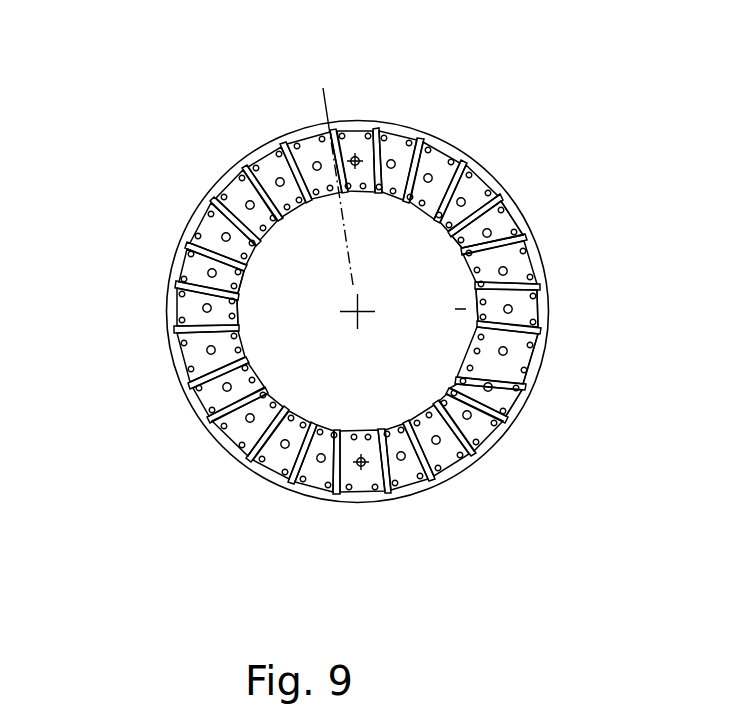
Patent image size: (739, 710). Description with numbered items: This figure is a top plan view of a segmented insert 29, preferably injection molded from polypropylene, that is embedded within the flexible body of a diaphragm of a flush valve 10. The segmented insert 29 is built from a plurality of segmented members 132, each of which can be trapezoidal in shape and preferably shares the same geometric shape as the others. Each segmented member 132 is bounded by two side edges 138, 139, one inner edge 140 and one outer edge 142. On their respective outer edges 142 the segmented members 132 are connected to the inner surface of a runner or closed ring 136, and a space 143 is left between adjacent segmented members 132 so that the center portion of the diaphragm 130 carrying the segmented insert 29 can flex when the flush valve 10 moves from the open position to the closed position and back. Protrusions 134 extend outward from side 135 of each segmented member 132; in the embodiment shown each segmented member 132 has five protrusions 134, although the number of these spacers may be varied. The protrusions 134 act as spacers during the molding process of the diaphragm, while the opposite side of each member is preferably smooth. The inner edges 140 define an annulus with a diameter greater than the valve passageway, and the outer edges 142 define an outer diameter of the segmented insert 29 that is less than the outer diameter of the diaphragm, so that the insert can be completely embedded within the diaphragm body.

The center portion of the diaphragm 130 is at (365, 110).
The segmented member 132 is at (264, 161).
The protrusion 134 is at (184, 243).
The side of the segmented member 135 is at (438, 168).
The closed ring 136 is at (167, 283).
The side edge 138 is at (470, 170).
The side edge 139 is at (484, 213).
The inner edge 140 is at (472, 337).
The outer edge 142 is at (518, 402).
The space 143 is at (246, 355).
The flush valve 10 is at (323, 88).
The segmented insert 29 is at (562, 285).